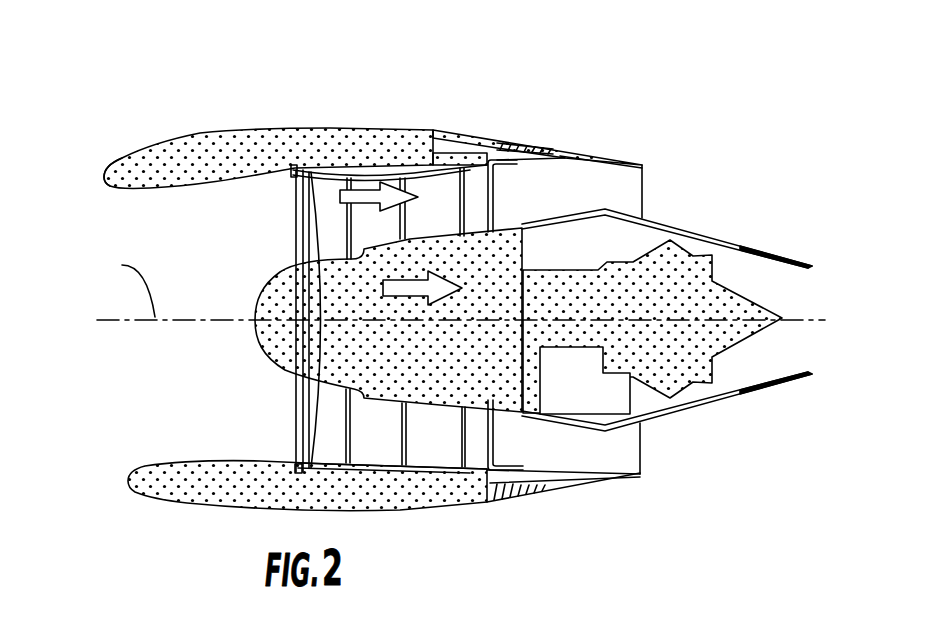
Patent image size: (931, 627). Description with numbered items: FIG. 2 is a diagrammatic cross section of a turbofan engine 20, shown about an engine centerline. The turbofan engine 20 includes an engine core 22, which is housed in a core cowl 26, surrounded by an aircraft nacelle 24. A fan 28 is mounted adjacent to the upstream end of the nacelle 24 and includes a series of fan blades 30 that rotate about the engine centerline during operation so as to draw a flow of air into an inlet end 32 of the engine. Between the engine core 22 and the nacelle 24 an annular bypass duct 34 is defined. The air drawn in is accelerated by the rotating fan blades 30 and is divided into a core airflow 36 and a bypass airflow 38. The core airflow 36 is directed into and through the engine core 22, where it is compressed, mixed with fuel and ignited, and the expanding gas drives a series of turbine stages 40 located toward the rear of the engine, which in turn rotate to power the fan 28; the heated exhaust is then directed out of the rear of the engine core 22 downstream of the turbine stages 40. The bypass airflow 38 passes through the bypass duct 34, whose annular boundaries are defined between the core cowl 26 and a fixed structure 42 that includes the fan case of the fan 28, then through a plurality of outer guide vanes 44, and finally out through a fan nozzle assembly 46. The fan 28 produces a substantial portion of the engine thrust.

The turbofan engine 20 is at (247, 103).
The engine core 22 is at (251, 350).
The aircraft nacelle 24 is at (237, 138).
The core cowl 26 is at (685, 230).
The fan 28 is at (285, 198).
The fan blades 30 is at (313, 408).
The inlet end 32 is at (140, 160).
The annular bypass duct 34 is at (438, 191).
The core airflow 36 is at (417, 296).
The bypass airflow 38 is at (378, 199).
The turbine stages 40 is at (680, 362).
The fixed structure 42 is at (324, 178).
The outer guide vanes 44 is at (387, 430).
The fan nozzle assembly 46 is at (630, 136).